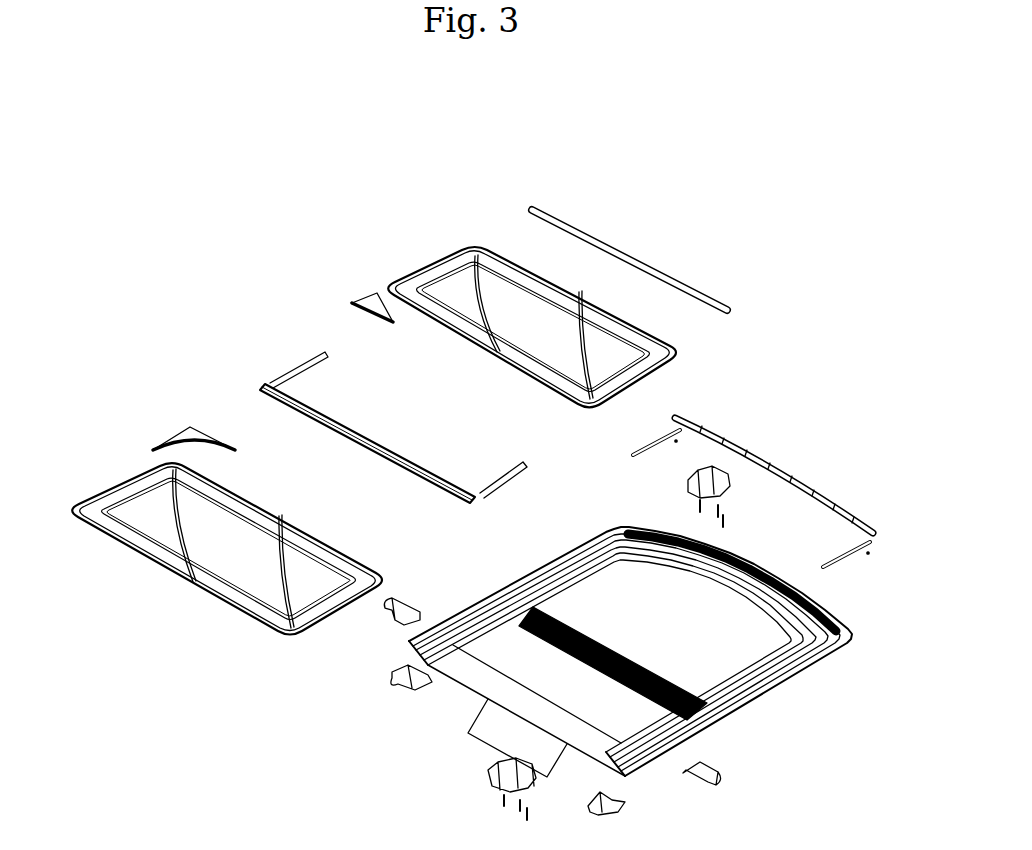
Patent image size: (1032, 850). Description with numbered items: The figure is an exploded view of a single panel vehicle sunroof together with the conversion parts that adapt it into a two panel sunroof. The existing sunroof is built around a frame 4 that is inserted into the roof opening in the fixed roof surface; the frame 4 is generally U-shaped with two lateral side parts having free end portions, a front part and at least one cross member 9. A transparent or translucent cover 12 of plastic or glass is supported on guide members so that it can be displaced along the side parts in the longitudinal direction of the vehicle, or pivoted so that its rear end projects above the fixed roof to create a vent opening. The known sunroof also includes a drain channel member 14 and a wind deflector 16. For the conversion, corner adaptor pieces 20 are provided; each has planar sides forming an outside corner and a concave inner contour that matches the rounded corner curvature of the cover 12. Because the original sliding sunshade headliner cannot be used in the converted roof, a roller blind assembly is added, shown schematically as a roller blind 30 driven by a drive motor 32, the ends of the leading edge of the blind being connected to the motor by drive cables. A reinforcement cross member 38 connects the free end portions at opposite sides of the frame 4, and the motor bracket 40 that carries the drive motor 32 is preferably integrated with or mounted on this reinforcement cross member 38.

The frame 4 is at (745, 719).
The cross member 9 is at (640, 663).
The cover 12 is at (433, 260).
The drain channel member 14 is at (380, 460).
The wind deflector 16 is at (748, 440).
The corner adaptor pieces 20 is at (370, 298).
The roller blind 30 is at (655, 262).
The drive motor 32 is at (495, 788).
The reinforcement cross member 38 is at (553, 712).
The motor bracket 40 is at (470, 724).